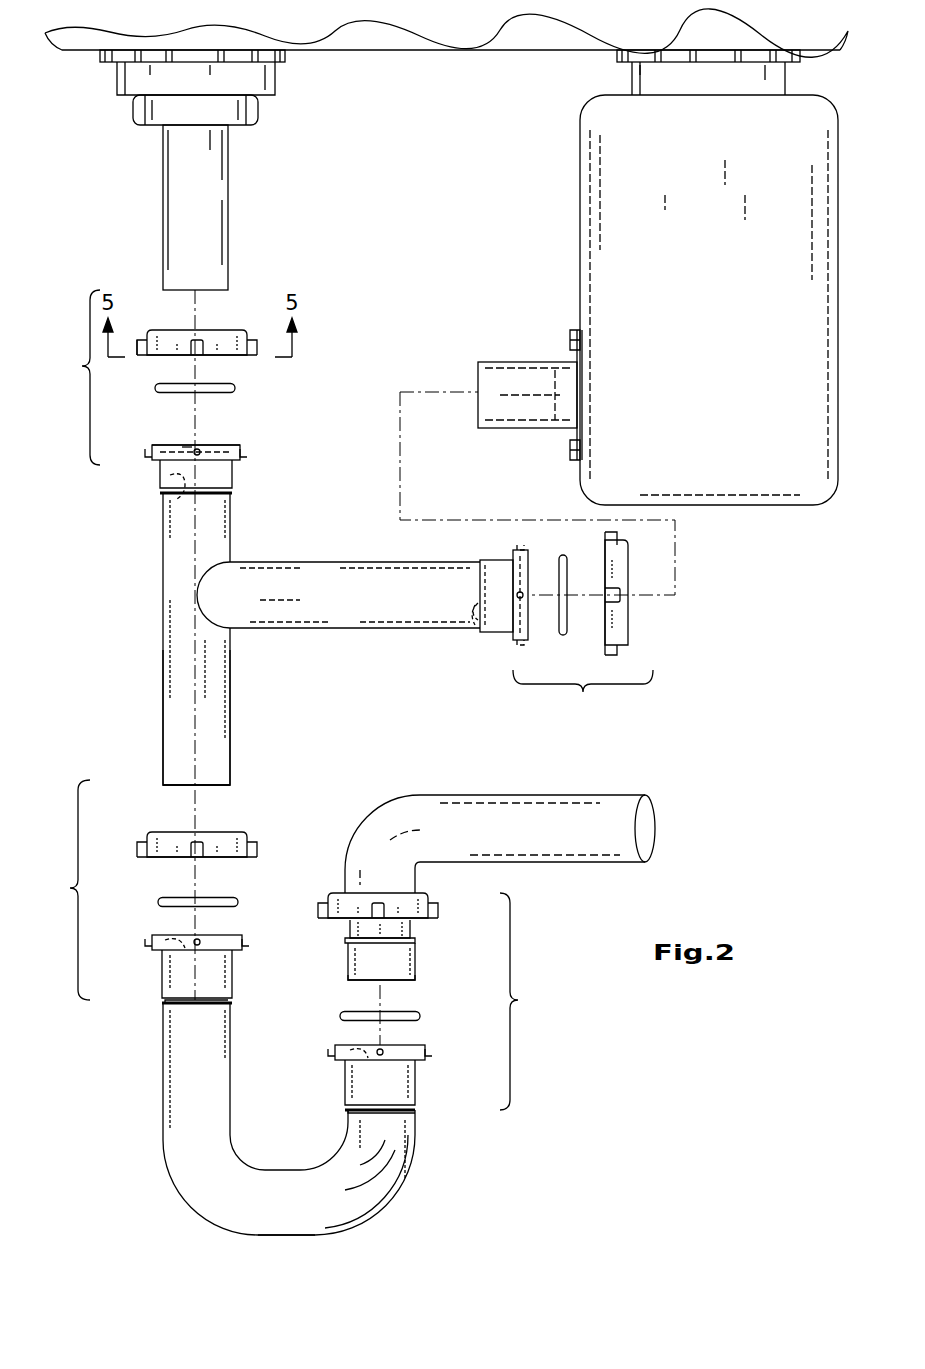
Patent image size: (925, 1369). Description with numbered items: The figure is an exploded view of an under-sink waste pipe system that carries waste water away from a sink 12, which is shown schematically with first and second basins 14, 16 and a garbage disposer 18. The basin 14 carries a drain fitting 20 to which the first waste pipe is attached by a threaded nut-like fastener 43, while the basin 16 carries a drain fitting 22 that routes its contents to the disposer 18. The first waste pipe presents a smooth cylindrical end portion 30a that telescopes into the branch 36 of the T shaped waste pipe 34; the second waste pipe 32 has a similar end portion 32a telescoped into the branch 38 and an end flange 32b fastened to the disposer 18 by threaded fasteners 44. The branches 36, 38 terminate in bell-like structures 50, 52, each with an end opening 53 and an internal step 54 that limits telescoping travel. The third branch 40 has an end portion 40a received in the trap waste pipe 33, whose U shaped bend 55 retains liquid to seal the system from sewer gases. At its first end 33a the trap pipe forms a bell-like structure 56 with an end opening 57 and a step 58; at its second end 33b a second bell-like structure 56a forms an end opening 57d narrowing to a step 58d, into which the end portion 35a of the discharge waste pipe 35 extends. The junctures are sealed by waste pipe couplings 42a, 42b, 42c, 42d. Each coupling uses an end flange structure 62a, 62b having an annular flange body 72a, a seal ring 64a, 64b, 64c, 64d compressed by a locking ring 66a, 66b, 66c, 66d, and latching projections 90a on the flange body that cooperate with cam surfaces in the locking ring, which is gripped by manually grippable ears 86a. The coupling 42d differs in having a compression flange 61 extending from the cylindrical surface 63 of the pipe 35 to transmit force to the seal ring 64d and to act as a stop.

The sink 12 is at (415, 52).
The first basin 14 is at (195, 45).
The second basin 16 is at (700, 42).
The garbage disposer 18 is at (709, 300).
The drain fitting 20 is at (145, 82).
The drain fitting 22 is at (710, 80).
The end portion 30a is at (195, 280).
The second waste pipe 32 is at (543, 381).
The end portion 32a is at (490, 380).
The end flange 32b is at (578, 332).
The trap waste pipe 33 is at (200, 1165).
The first end 33a is at (212, 980).
The second trap pipe end 33b is at (400, 1080).
The T shaped waste pipe 34 is at (150, 598).
The discharge waste pipe 35 is at (470, 825).
The end portion 35a is at (425, 983).
The branch 36 is at (162, 530).
The branch 38 is at (395, 560).
The branch 40 is at (210, 720).
The end portion 40a is at (188, 763).
The waste pipe coupling 42a is at (69, 377).
The waste pipe coupling 42b is at (583, 695).
The waste pipe coupling 42c is at (58, 890).
The waste pipe coupling 42d is at (532, 1001).
The threaded nut-like fastener 43 is at (222, 110).
The threaded fasteners 44 is at (568, 340).
The bell-like structure 50 is at (175, 470).
The bell-like structure 52 is at (498, 590).
The end opening 53 is at (215, 447).
The step 54 is at (180, 505).
The U shaped bend 55 is at (282, 1208).
The bell-like structure 56 is at (175, 960).
The second bell-like structure 56a is at (355, 1075).
The end opening 57 is at (178, 940).
The end opening 57d is at (360, 1050).
The step 58 is at (475, 610).
The step 58d is at (392, 1110).
The compression flange 61 is at (350, 938).
The end flange structure 62a is at (245, 442).
The end flange structure 62b is at (520, 595).
The cylindrical surface 63 is at (400, 955).
The seal ring 64a is at (232, 390).
The seal ring 64b is at (562, 560).
The seal ring 64c is at (170, 900).
The seal ring 64d is at (360, 1015).
The locking ring 66a is at (220, 335).
The locking ring 66b is at (620, 632).
The locking ring 66c is at (170, 842).
The locking ring 66d is at (345, 900).
The annular flange body 72a is at (185, 448).
The manually grippable ears 86a is at (145, 338).
The latching projections 90a is at (152, 452).